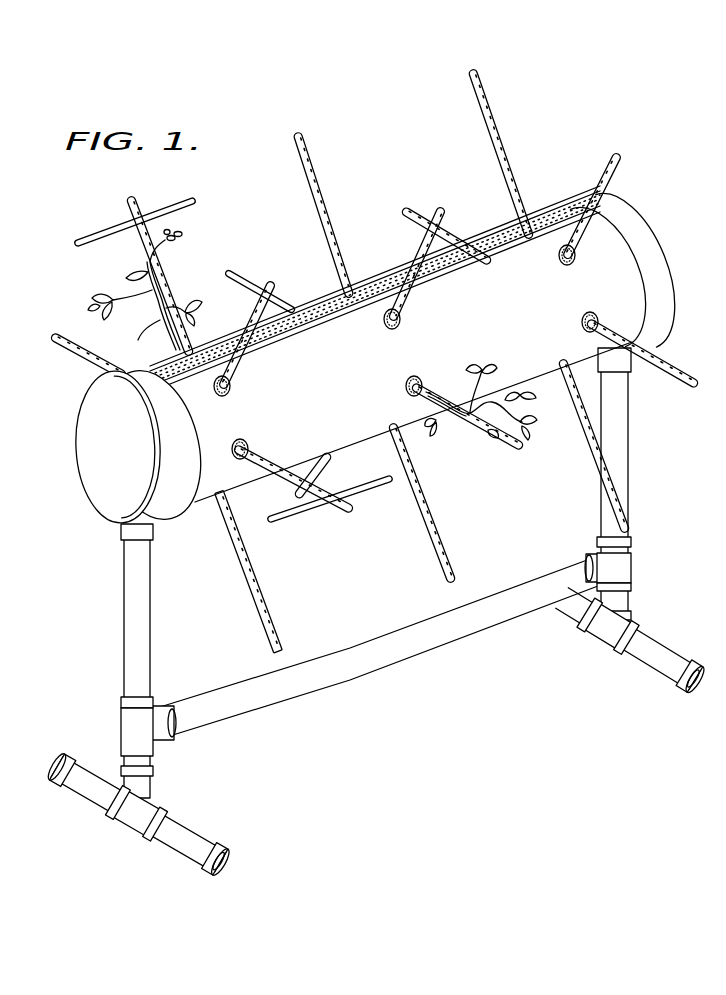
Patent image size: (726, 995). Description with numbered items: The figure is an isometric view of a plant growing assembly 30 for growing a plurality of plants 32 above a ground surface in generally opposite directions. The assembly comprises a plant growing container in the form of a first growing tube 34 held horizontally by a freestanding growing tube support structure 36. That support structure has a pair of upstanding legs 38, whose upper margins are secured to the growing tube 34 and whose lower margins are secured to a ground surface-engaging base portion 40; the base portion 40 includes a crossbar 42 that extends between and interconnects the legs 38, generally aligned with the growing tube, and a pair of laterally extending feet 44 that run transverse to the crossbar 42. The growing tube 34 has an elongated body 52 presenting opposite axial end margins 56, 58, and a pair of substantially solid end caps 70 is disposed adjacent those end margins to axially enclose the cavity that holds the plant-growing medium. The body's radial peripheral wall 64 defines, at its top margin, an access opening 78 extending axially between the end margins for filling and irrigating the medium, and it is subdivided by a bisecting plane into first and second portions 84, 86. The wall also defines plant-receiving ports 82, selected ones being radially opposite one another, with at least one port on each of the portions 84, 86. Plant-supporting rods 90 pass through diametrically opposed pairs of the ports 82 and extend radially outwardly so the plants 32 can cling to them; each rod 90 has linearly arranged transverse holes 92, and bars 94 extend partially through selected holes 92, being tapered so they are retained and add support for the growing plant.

The plant growing assembly 30 is at (366, 160).
The plants 32 is at (158, 312).
The first growing tube 34 is at (317, 292).
The freestanding growing tube support structure 36 is at (103, 597).
The legs 38 is at (621, 427).
The base portion 40 is at (366, 703).
The crossbar 42 is at (390, 640).
The feet 44 is at (668, 653).
The body 52 is at (530, 368).
The axial end margin 56 is at (201, 520).
The axial end margin 58 is at (550, 213).
The radial peripheral wall 64 is at (377, 408).
The end caps 70 is at (659, 282).
The access opening 78 is at (385, 280).
The plant-receiving ports 82 is at (593, 313).
The first portion 84 is at (614, 227).
The second portion 86 is at (487, 233).
The plant-supporting rods 90 is at (139, 208).
The transverse holes 92 is at (128, 212).
The bars 94 is at (93, 233).